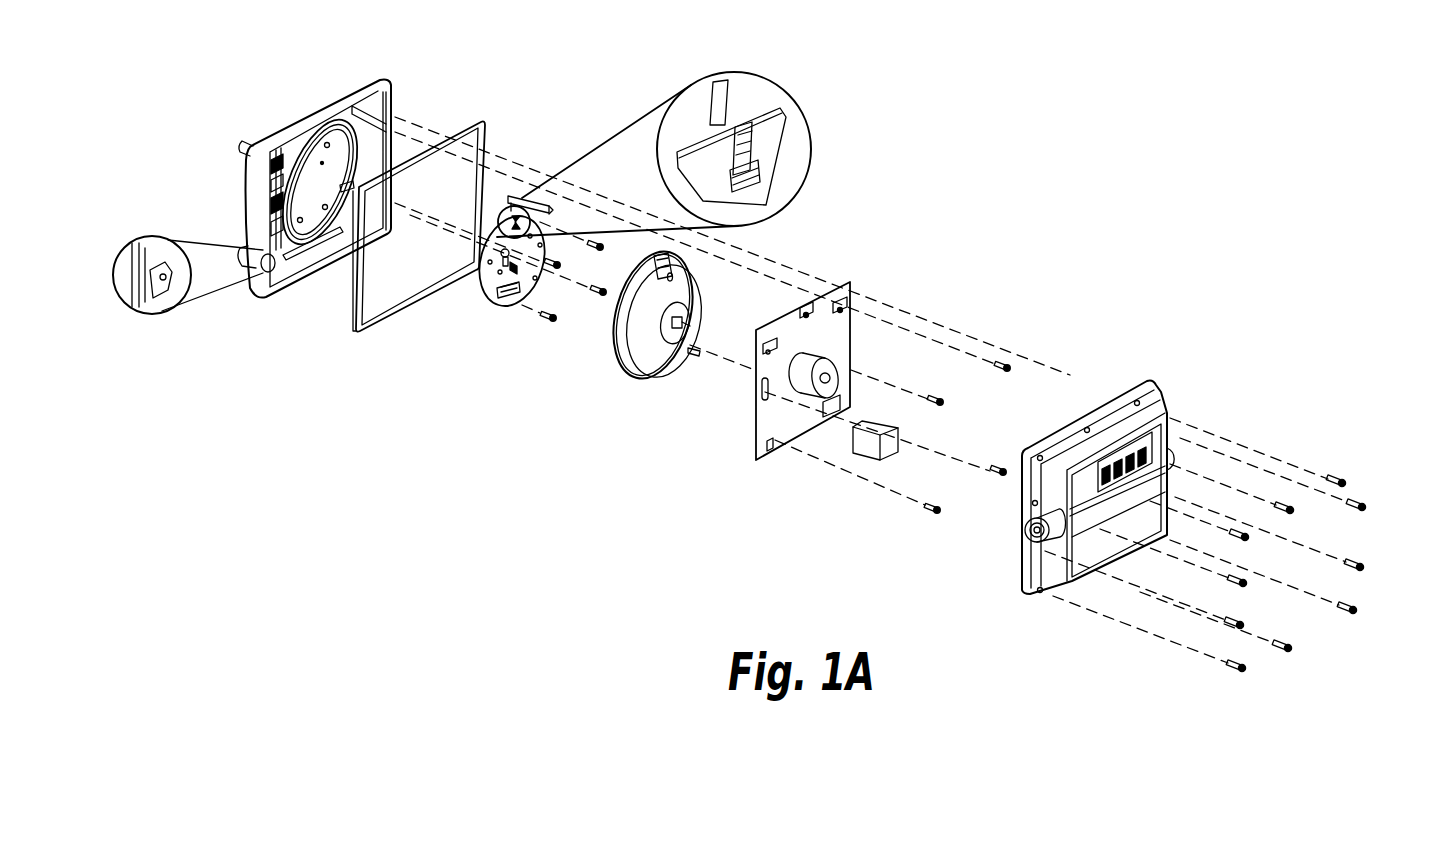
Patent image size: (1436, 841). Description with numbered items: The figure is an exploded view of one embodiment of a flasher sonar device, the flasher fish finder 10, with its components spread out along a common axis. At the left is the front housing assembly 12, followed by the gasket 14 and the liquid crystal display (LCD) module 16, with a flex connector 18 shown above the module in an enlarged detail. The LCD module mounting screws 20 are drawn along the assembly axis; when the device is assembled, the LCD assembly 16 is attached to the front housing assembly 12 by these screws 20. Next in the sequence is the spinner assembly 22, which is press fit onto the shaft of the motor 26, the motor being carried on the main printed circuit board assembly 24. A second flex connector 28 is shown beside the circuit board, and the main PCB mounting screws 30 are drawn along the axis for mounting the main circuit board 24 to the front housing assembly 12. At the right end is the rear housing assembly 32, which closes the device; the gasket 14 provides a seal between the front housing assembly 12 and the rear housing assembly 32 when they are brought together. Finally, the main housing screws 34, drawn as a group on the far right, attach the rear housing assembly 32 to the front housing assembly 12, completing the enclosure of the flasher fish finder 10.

The flasher fish finder 10 is at (848, 241).
The front housing assembly 12 is at (248, 296).
The gasket 14 is at (357, 332).
The liquid crystal display (LCD) module 16 is at (488, 305).
The flex connector 18 is at (530, 205).
The LCD module mounting screws 20 is at (553, 322).
The spinner assembly 22 is at (626, 363).
The main printed circuit board assembly 24 is at (755, 430).
The motor 26 is at (806, 385).
The flex connector 28 is at (865, 448).
The main PCB mounting screws 30 is at (934, 512).
The rear housing assembly 32 is at (1036, 592).
The main housing screws 34 is at (1240, 672).